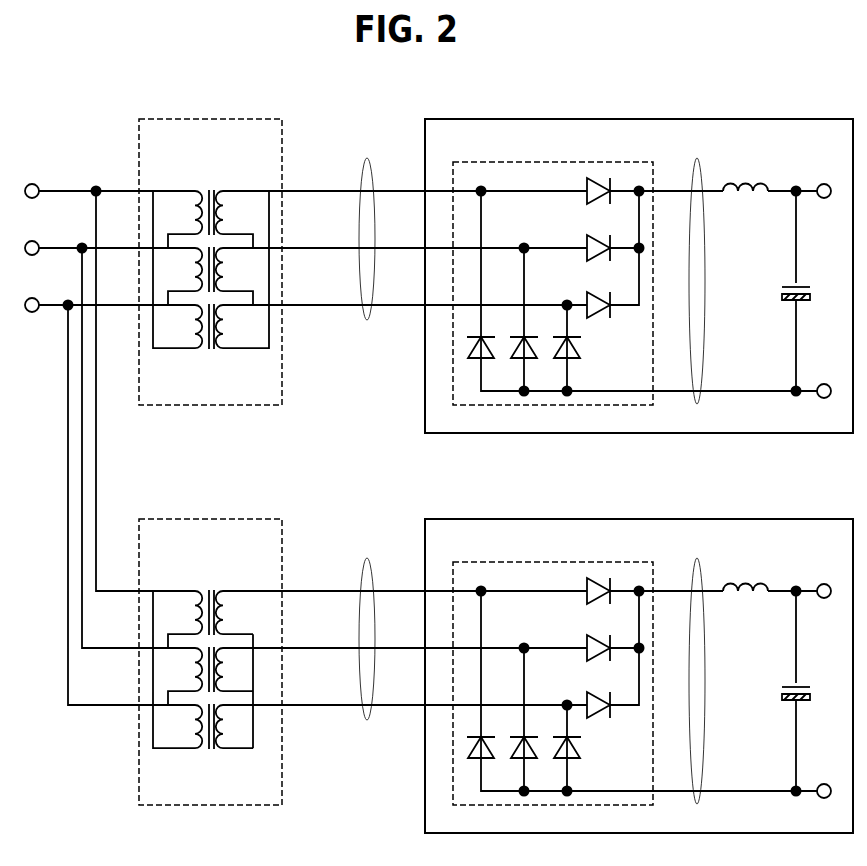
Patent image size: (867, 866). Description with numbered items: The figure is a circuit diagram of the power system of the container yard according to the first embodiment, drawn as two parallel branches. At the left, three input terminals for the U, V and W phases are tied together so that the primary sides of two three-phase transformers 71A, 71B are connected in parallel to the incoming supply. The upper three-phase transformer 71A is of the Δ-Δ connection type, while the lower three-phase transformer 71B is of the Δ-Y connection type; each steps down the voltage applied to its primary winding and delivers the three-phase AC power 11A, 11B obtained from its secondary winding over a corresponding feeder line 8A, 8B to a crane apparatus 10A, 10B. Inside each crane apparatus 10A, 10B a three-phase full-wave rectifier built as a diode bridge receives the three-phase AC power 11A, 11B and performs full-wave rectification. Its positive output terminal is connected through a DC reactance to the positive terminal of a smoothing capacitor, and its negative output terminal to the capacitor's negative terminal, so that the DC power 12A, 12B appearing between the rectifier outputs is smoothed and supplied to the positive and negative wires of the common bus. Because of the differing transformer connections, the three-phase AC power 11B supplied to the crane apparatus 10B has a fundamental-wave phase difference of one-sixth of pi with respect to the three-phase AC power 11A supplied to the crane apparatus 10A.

The three-phase transformer 71A is at (198, 118).
The three-phase transformer 71B is at (198, 518).
The crane apparatus 10A is at (470, 119).
The crane apparatus 10B is at (470, 519).
The three-phase AC power 11A is at (367, 158).
The three-phase AC power 11B is at (367, 558).
The DC power 12A is at (697, 158).
The DC power 12B is at (697, 558).
The feeder line 8A is at (353, 272).
The feeder line 8B is at (353, 672).